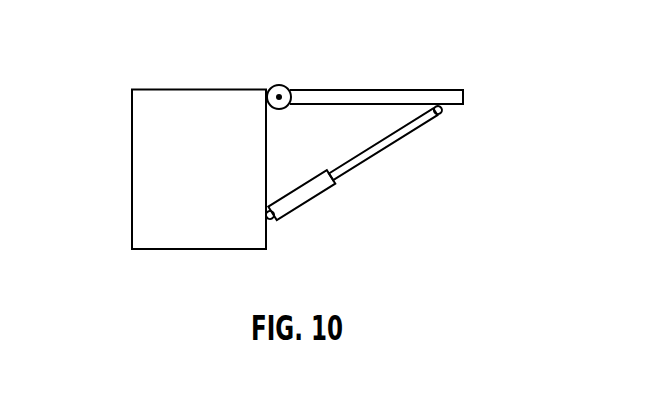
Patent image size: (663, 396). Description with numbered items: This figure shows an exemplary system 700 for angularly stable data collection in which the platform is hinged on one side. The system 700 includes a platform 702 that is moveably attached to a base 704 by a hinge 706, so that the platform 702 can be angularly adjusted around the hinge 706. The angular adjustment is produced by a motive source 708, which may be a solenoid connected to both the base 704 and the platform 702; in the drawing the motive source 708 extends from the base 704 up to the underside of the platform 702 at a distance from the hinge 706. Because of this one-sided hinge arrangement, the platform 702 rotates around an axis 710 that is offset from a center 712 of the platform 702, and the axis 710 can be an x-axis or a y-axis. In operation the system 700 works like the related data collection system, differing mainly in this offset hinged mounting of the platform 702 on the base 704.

The system 700 is at (457, 33).
The platform 702 is at (436, 89).
The base 704 is at (132, 143).
The hinge 706 is at (278, 85).
The motive source 708 is at (312, 197).
The axis 710 is at (269, 89).
The center 712 is at (377, 89).